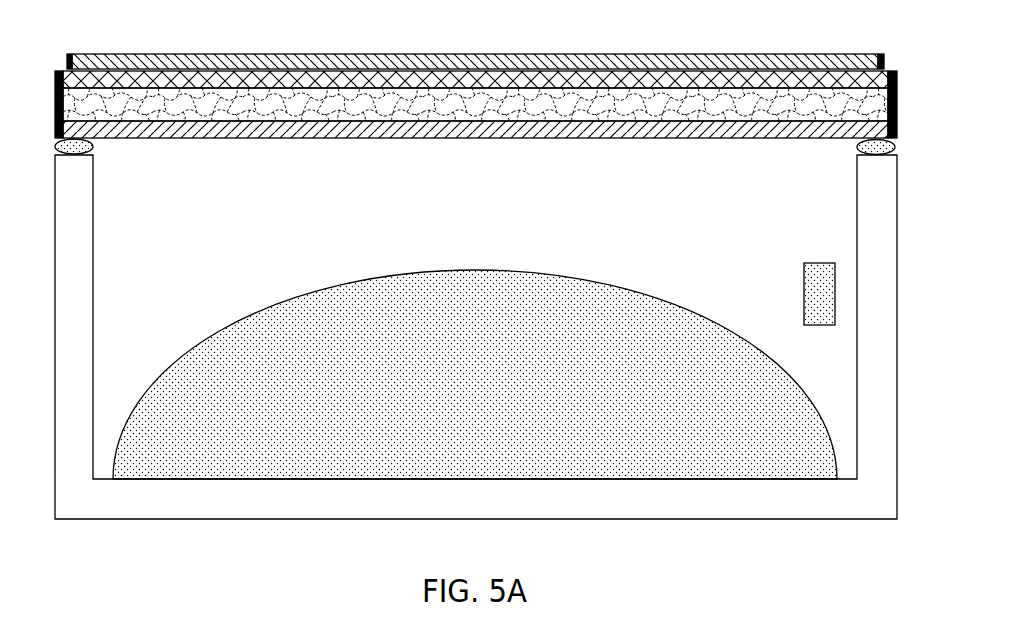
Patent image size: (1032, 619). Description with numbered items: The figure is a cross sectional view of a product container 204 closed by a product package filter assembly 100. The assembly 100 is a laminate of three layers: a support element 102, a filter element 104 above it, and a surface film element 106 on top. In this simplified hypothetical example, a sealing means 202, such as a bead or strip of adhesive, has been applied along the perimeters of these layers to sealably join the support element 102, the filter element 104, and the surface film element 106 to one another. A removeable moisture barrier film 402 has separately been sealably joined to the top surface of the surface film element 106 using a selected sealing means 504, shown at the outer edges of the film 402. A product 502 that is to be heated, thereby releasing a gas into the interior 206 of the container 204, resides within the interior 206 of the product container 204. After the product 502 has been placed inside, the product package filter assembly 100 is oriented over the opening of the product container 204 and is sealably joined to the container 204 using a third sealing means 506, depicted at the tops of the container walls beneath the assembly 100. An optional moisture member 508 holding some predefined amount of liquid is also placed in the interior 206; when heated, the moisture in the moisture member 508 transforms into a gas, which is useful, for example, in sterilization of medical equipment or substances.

The product package filter assembly 100 is at (475, 98).
The support element 102 is at (343, 138).
The filter element 104 is at (480, 105).
The surface film element 106 is at (620, 80).
The sealing means 202 is at (55, 115).
The product container 204 is at (897, 337).
The interior 206 is at (108, 325).
The removeable moisture barrier film 402 is at (725, 53).
The product 502 is at (665, 313).
The sealing means 504 is at (67, 62).
The third sealing means 506 is at (93, 148).
The moisture member 508 is at (820, 263).